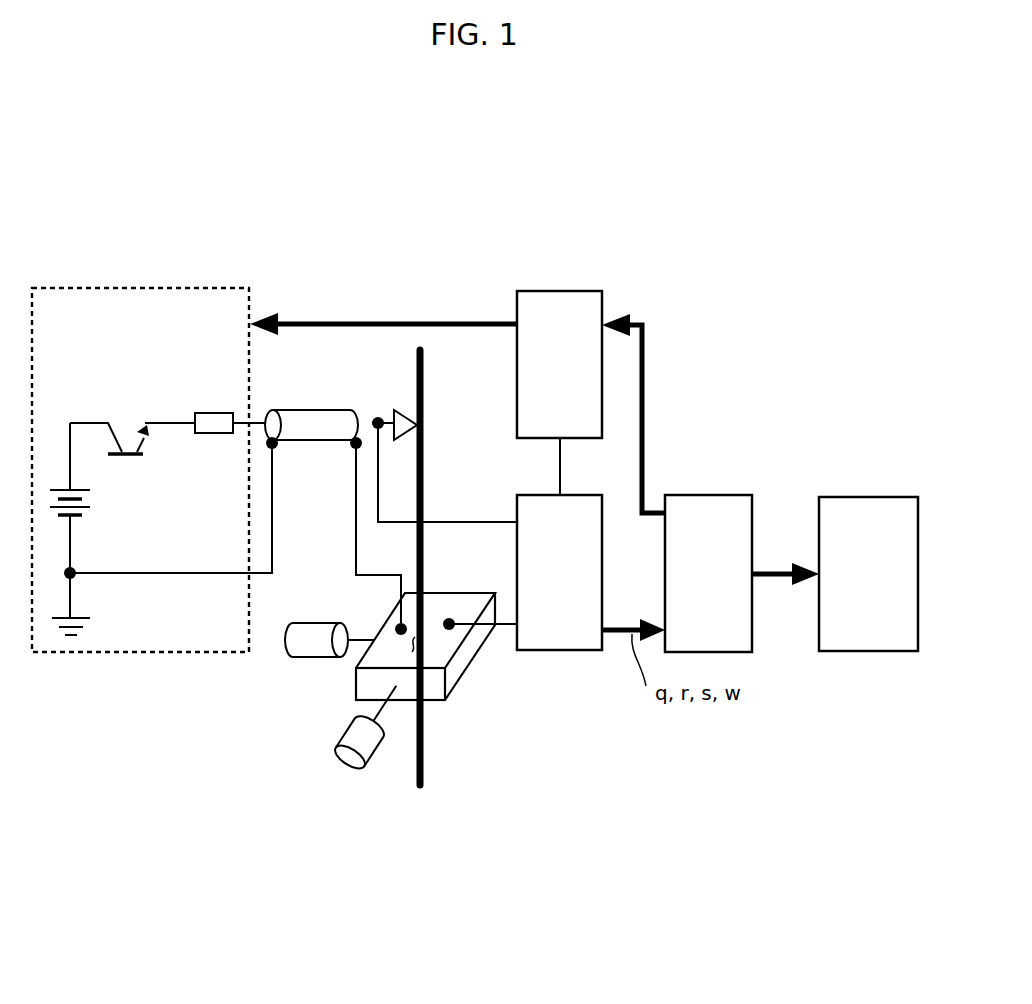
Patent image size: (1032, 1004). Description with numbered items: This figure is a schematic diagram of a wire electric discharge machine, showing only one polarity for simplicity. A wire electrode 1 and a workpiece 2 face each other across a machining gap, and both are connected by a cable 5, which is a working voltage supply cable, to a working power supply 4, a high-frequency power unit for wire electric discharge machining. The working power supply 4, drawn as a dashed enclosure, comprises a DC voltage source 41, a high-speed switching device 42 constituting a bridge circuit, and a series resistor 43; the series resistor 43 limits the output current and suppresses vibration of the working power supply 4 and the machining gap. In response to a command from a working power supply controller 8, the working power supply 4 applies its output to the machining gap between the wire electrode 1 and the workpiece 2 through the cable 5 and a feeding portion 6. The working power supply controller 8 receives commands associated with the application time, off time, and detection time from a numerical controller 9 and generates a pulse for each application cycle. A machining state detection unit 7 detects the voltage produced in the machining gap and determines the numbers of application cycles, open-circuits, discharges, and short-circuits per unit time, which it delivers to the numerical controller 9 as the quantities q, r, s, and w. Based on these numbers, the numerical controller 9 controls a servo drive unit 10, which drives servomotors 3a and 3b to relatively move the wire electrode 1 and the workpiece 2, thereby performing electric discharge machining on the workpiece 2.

The wire electrode 1 is at (423, 405).
The workpiece 2 is at (458, 598).
The servomotor 3a is at (296, 658).
The servomotor 3b is at (356, 770).
The working power supply 4 is at (139, 288).
The cable 5 is at (312, 410).
The feeding portion 6 is at (391, 408).
The machining state detection unit 7 is at (560, 654).
The working power supply controller 8 is at (558, 290).
The numerical controller 9 is at (706, 494).
The servo drive unit 10 is at (866, 496).
The DC voltage source 41 is at (92, 507).
The high-speed switching device 42 is at (125, 438).
The series resistor 43 is at (214, 412).